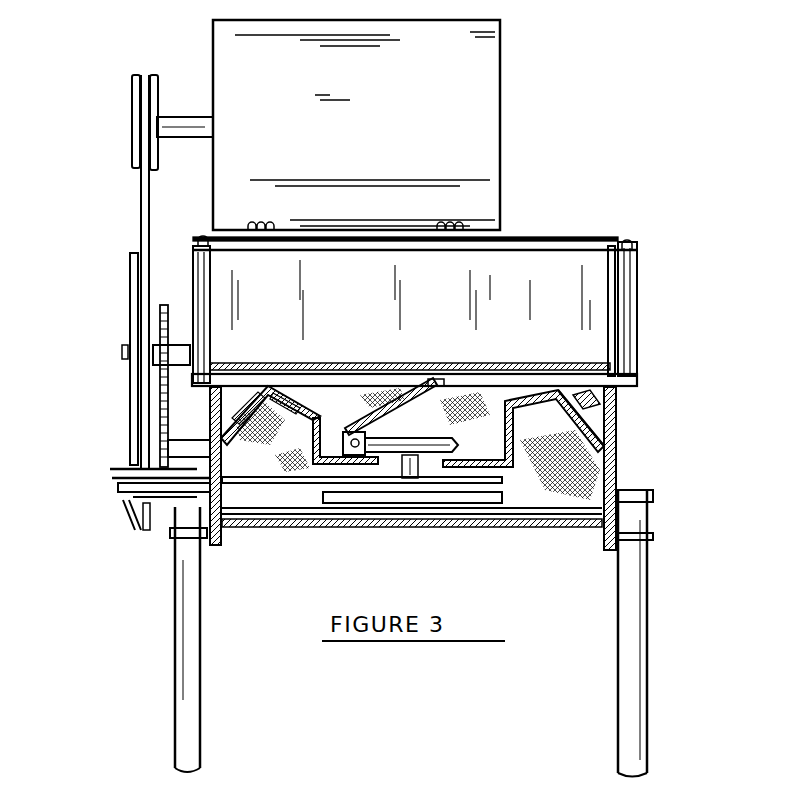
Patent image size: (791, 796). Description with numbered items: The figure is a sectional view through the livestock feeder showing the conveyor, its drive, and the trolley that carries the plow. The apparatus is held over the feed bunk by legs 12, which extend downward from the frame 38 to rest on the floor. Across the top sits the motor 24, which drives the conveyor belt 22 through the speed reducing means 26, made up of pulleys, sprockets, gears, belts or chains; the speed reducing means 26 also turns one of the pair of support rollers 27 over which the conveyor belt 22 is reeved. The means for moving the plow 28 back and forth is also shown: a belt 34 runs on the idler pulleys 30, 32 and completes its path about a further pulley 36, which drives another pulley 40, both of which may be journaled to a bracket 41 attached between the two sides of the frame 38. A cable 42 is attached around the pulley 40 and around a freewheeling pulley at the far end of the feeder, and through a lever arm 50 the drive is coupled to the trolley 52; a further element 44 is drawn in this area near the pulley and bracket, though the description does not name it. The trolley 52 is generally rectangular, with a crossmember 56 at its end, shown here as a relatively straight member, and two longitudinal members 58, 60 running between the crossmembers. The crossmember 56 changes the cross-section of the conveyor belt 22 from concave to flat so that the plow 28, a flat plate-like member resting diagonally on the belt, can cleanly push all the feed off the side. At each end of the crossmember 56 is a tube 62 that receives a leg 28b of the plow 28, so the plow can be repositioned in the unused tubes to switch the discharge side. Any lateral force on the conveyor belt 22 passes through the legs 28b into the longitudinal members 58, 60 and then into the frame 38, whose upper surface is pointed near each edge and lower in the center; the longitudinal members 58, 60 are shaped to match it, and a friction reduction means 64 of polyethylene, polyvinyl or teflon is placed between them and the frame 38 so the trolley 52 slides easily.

The legs 12 is at (187, 652).
The conveyor belt 22 is at (428, 378).
The motor 24 is at (480, 112).
The speed reducing means 26 is at (120, 260).
The support rollers 27 is at (577, 493).
The plow 28 is at (593, 330).
The leg 28b is at (200, 238).
The idler pulley 30 is at (110, 470).
The idler pulley 32 is at (115, 493).
The belt 34 is at (260, 470).
The pulley 36 is at (477, 527).
The frame 38 is at (612, 470).
The pulley 40 is at (414, 438).
The bracket 41 is at (317, 510).
The cable 42 is at (452, 448).
The bracket 44 is at (313, 457).
The lever arm 50 is at (377, 362).
The trolley 52 is at (493, 383).
The crossmember 56 is at (556, 402).
The longitudinal member 58 is at (318, 403).
The longitudinal member 60 is at (600, 412).
The tube 62 is at (210, 381).
The friction reduction means 64 is at (300, 396).